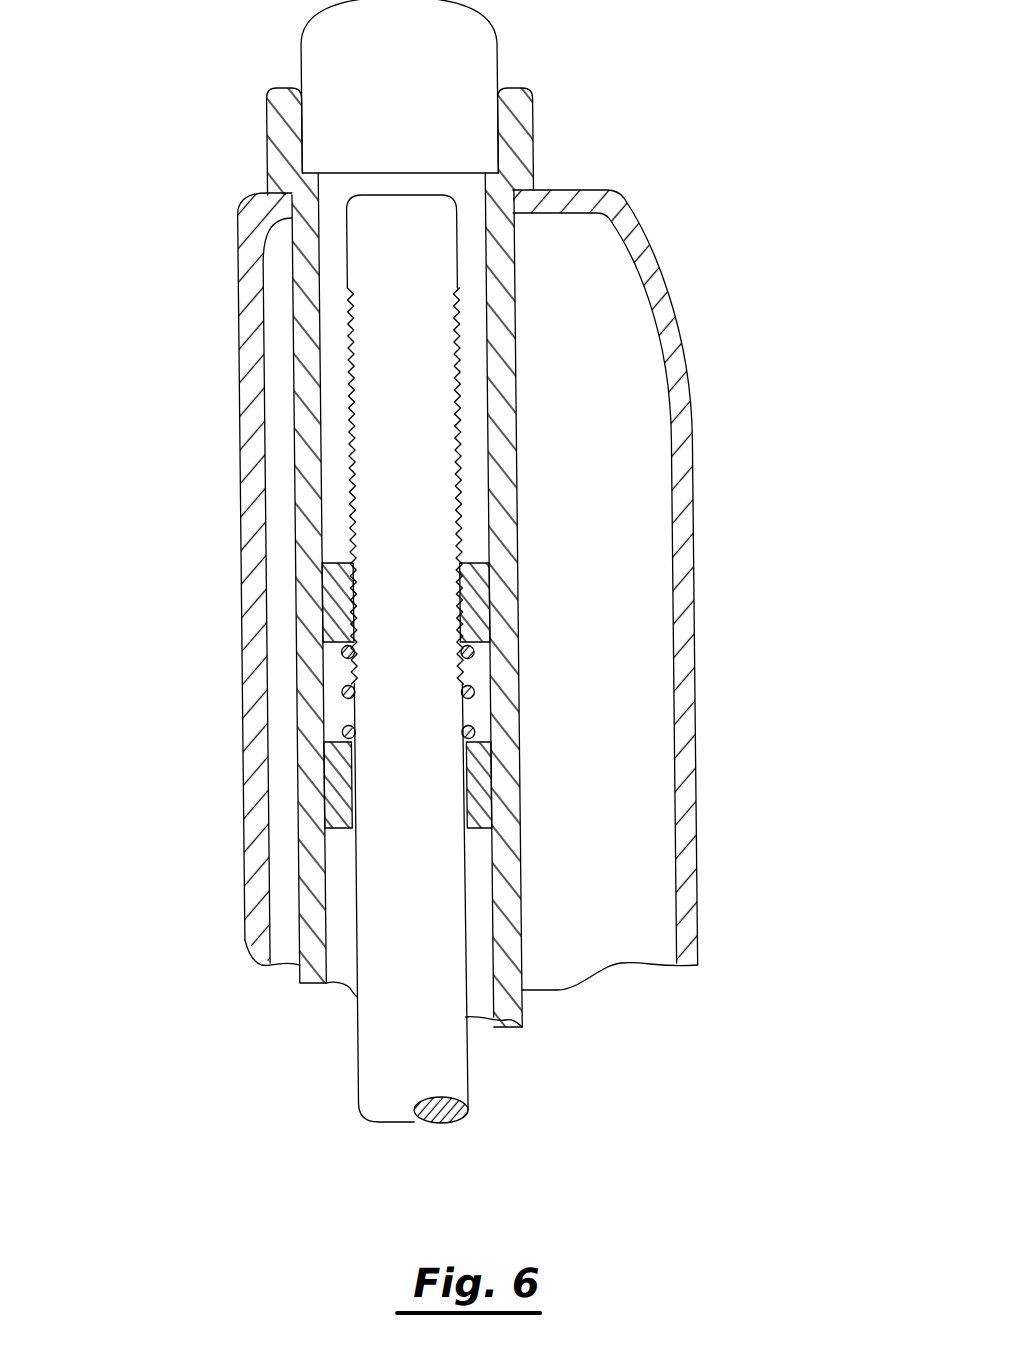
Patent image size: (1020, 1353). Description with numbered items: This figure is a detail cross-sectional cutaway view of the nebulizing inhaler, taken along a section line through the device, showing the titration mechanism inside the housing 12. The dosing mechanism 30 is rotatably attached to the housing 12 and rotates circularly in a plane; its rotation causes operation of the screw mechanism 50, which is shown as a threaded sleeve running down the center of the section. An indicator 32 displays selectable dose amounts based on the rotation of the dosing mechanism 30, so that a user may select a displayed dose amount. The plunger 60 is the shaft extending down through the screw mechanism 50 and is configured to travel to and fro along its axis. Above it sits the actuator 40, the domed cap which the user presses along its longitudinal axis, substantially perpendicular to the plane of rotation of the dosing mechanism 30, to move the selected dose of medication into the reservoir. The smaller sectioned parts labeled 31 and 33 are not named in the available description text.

The housing 12 is at (238, 355).
The dosing mechanism 30 is at (532, 128).
The upper nut 31 is at (474, 612).
The indicator 32 is at (485, 772).
The spring 33 is at (463, 685).
The actuator 40 is at (483, 43).
The screw mechanism 50 is at (289, 632).
The plunger 60 is at (419, 1065).